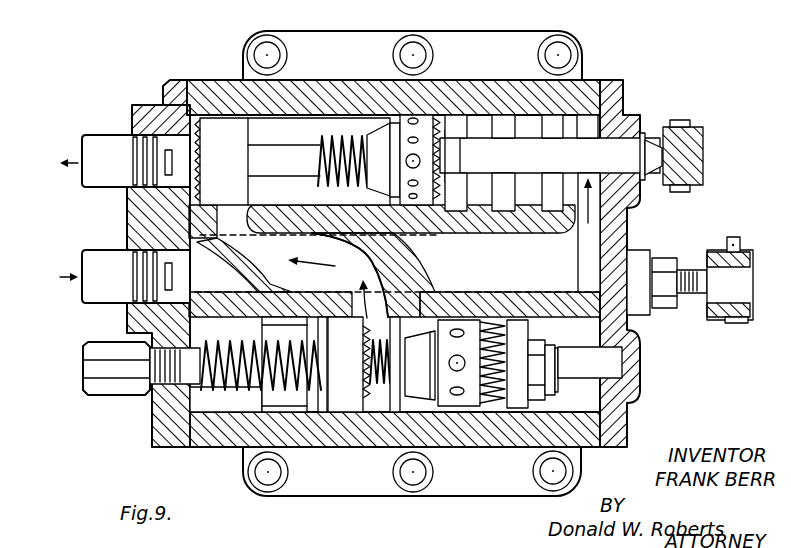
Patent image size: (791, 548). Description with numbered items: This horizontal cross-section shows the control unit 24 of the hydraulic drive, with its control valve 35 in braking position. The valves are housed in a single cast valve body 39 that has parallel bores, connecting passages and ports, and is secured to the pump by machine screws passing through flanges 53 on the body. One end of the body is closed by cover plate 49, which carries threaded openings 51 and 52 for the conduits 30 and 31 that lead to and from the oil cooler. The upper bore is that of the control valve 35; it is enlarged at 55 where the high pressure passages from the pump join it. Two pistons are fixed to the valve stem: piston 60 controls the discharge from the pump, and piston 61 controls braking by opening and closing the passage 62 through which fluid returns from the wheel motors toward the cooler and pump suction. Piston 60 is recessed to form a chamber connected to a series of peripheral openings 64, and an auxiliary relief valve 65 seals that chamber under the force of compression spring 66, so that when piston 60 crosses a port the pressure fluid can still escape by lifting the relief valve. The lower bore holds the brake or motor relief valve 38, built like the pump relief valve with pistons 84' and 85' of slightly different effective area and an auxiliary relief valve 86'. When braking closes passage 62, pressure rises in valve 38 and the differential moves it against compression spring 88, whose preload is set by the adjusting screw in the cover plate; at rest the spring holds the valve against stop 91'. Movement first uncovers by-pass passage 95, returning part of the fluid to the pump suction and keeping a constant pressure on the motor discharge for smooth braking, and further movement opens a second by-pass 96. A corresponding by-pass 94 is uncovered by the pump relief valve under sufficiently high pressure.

The control unit 24 is at (221, 80).
The conduit 30 is at (100, 142).
The conduit 31 is at (100, 296).
The control valve 35 is at (584, 232).
The brake or motor relief valve 38 is at (455, 412).
The valve body 39 is at (493, 88).
The cover plate 49 is at (175, 88).
The threaded opening 51 is at (150, 134).
The threaded opening 52 is at (134, 261).
The flange 53 is at (528, 40).
The enlarged bore portion 55 is at (540, 112).
The piston 60 is at (409, 155).
The piston 61 is at (238, 131).
The passage 62 is at (278, 263).
The openings 64 is at (409, 139).
The auxiliary relief valve 65 is at (382, 135).
The compression spring 66 is at (340, 188).
The piston 84' is at (498, 331).
The piston 85' is at (316, 397).
The auxiliary relief valve 86' is at (395, 399).
The compression spring 88 is at (243, 343).
The stop 91' is at (590, 341).
The by-pass 94 is at (193, 207).
The by-pass passage 95 is at (573, 297).
The second by-pass 96 is at (200, 407).